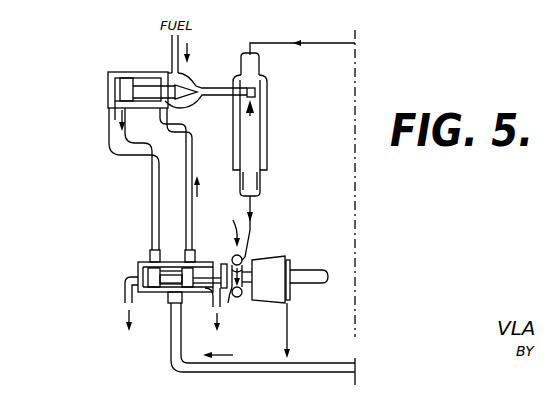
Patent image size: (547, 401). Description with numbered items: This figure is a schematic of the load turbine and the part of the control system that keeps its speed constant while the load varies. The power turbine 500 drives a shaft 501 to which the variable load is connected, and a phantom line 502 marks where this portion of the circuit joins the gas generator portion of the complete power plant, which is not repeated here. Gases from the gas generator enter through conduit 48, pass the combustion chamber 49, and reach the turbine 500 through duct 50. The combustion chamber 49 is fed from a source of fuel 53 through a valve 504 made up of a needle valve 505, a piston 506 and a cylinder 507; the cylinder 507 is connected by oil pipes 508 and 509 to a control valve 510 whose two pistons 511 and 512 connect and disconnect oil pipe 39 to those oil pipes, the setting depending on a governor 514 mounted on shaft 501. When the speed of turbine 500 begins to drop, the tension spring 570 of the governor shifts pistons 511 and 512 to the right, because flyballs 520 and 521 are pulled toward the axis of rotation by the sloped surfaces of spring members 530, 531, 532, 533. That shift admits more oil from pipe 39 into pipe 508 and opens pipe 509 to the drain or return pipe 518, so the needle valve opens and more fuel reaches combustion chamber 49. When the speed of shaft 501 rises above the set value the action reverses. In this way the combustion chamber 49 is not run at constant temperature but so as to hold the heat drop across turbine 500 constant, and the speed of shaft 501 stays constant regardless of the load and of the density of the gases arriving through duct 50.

The oil pipe 39 is at (218, 373).
The conduit 48 is at (340, 43).
The combustion chamber 49 is at (267, 125).
The duct 50 is at (253, 200).
The source of fuel 53 is at (171, 43).
The power turbine 500 is at (282, 258).
The shaft 501 is at (313, 273).
The phantom line 502 is at (357, 350).
The valve 504 is at (123, 72).
The needle valve 505 is at (140, 75).
The piston 506 is at (120, 93).
The cylinder 507 is at (115, 82).
The oil pipe 508 is at (192, 153).
The oil pipe 509 is at (150, 179).
The control valve 510 is at (160, 241).
The piston 511 is at (150, 272).
The piston 512 is at (228, 248).
The governor 514 is at (238, 223).
The drain pipe 518 is at (125, 293).
The flyball 520 is at (254, 254).
The flyball 521 is at (240, 306).
The spring member 530 is at (249, 238).
The spring member 531 is at (228, 233).
The spring member 532 is at (228, 304).
The spring member 533 is at (241, 296).
The spring 570 is at (231, 259).